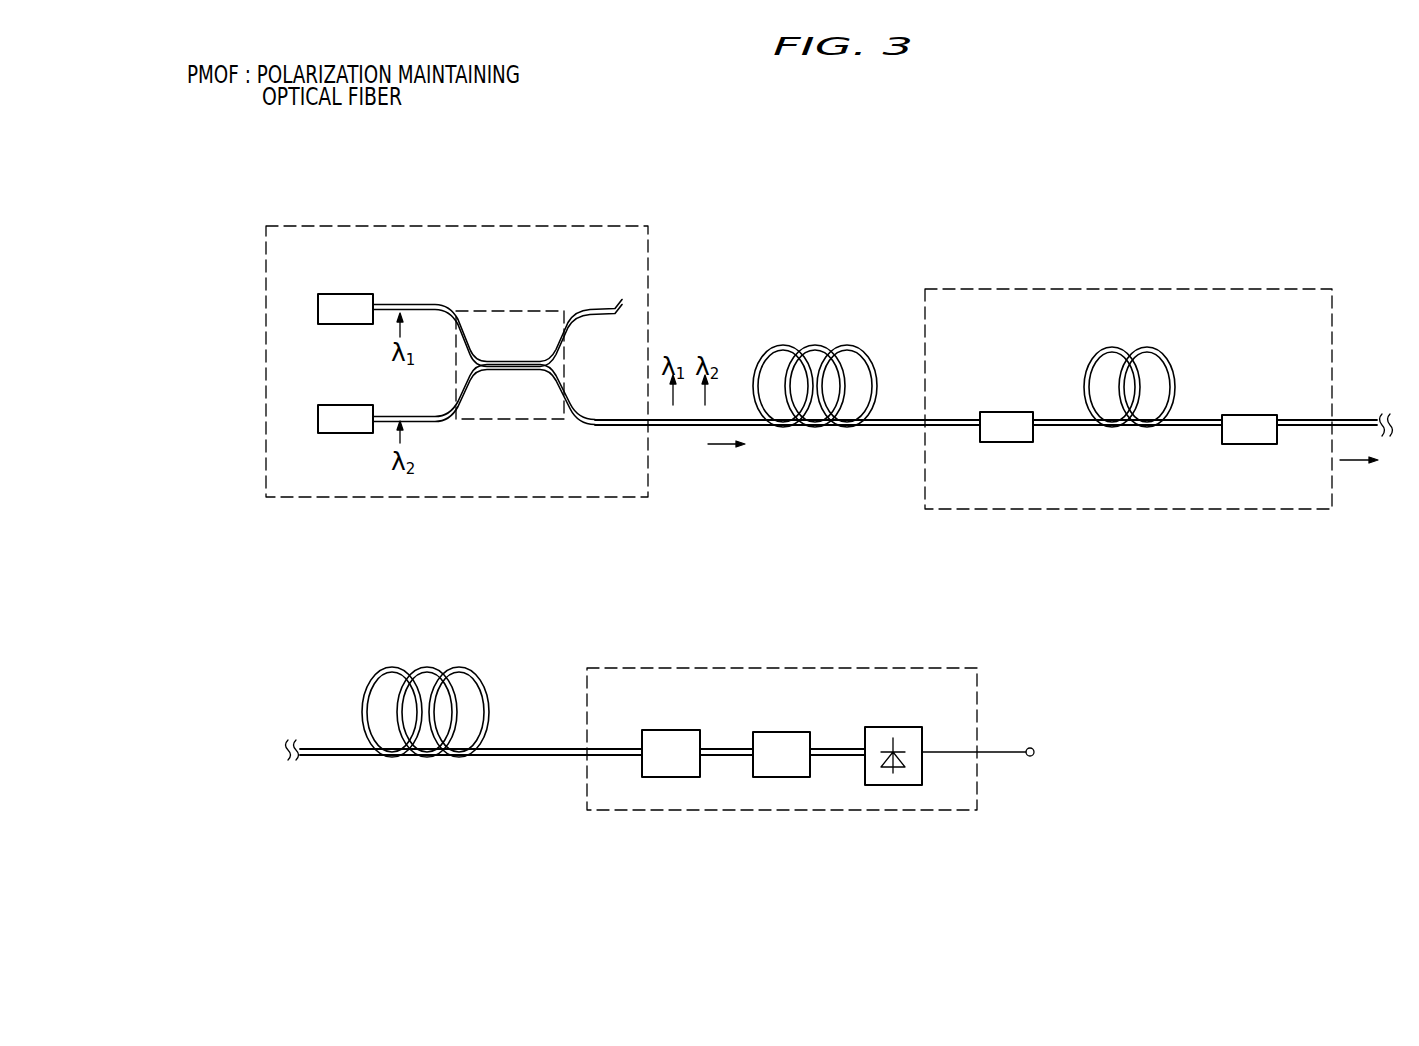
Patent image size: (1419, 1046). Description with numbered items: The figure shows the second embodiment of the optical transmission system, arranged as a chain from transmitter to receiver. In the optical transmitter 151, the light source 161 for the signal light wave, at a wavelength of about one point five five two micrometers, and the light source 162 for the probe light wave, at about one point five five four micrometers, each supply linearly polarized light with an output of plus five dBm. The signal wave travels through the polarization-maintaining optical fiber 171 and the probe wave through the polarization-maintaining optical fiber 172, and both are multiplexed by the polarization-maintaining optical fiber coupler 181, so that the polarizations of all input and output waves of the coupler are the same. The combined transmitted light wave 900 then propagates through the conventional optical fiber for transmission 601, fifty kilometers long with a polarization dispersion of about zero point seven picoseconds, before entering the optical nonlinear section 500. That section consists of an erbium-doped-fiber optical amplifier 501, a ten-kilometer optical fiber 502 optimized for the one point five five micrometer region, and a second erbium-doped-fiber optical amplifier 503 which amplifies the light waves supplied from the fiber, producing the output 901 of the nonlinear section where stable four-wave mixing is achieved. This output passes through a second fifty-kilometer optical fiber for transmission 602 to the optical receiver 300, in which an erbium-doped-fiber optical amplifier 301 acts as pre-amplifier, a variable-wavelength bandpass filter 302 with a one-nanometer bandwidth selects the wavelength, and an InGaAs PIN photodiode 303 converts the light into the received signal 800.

The optical transmitter 151 is at (617, 228).
The light source for the signal light wave 161 is at (328, 294).
The light source for the probe light wave 162 is at (337, 435).
The polarization-maintaining optical fiber 171 is at (412, 302).
The polarization-maintaining optical fiber 172 is at (435, 421).
The polarization-maintaining optical fiber coupler 181 is at (545, 419).
The optical fiber for transmission 601 is at (843, 347).
The transmitted light wave 900 is at (722, 450).
The optical nonlinear section 500 is at (1122, 288).
The erbium-doped-fiber optical amplifier 501 is at (995, 412).
The optical fiber 502 is at (1163, 345).
The erbium-doped-fiber optical amplifier 503 is at (1236, 415).
The output of nonlinear section 901 is at (1397, 545).
The optical fiber for transmission 602 is at (443, 668).
The optical receiver 300 is at (873, 670).
The erbium-doped-fiber optical amplifier 301 is at (650, 730).
The variable-wavelength bandpass filter 302 is at (790, 777).
The PIN photodiode 303 is at (925, 740).
The received signal 800 is at (1166, 758).